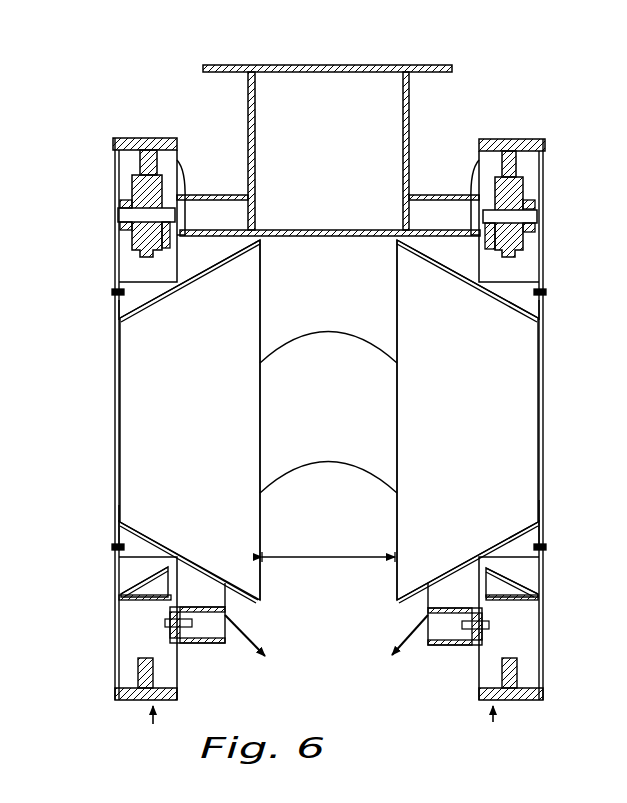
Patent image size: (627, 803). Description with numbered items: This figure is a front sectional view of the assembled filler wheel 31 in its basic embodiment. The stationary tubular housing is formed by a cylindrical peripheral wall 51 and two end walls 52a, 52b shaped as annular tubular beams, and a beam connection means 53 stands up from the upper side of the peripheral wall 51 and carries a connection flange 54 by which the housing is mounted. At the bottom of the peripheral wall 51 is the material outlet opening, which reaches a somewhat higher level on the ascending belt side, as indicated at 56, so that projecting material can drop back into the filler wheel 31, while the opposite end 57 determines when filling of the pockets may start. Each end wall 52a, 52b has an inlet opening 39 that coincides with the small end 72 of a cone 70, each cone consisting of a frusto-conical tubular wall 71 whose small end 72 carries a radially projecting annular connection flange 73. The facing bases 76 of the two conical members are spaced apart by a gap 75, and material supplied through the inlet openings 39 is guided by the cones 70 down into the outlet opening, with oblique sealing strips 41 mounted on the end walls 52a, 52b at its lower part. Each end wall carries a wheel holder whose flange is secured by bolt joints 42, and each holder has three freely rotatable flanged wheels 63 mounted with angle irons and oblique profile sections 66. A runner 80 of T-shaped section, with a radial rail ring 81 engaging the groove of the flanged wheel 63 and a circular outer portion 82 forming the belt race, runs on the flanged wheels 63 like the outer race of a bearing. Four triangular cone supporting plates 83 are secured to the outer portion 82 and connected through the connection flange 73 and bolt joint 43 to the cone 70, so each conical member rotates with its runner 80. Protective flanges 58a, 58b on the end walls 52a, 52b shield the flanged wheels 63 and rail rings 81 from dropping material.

The filler wheel 31 is at (490, 116).
The inlet opening 39 is at (118, 520).
The oblique sealing strip 41 is at (258, 650).
The bolt joint 42 is at (112, 292).
The bolt joint 43 is at (112, 547).
The cylindrical peripheral wall 51 is at (323, 240).
The end wall 52a is at (208, 643).
The end wall 52b is at (436, 645).
The beam connection means 53 is at (410, 102).
The connection flange 54 is at (420, 66).
The higher level of outlet opening 56 is at (322, 334).
The end of outlet opening 57 is at (340, 470).
The protective flange 58a is at (186, 170).
The protective flange 58b is at (470, 175).
The flanged wheel 63 is at (136, 192).
The oblique profile section 66 is at (520, 580).
The cone 70 is at (204, 425).
The tubular wall 71 is at (180, 282).
The small end 72 is at (118, 384).
The connection flange 73 is at (117, 316).
The gap 75 is at (330, 557).
The base 76 is at (262, 418).
The runner 80 is at (153, 722).
The rail ring 81 is at (138, 672).
The outer portion 82 is at (510, 139).
The cone supporting plate 83 is at (543, 246).